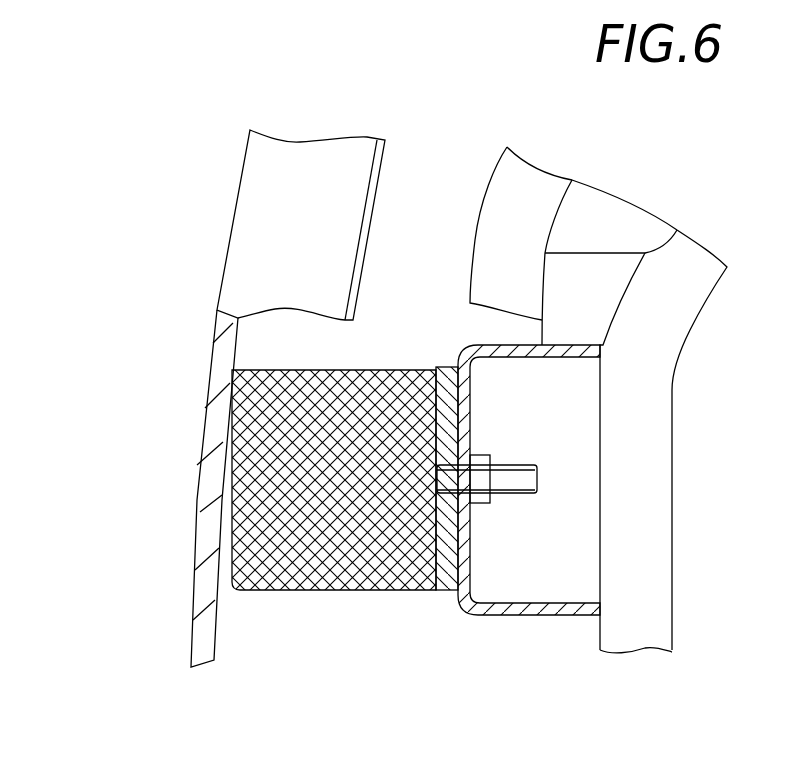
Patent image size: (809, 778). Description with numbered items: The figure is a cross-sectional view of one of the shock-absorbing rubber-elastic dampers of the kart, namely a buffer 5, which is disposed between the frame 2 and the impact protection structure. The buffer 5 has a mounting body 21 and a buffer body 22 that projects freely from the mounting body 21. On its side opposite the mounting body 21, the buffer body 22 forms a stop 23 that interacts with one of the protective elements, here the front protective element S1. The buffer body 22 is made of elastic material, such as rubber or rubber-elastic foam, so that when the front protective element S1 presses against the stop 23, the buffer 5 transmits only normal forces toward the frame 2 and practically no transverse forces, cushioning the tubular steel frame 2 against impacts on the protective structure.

The front protective element S1 is at (262, 210).
The frame 2 is at (637, 473).
The buffer 5 is at (358, 592).
The mounting body 21 is at (446, 565).
The buffer body 22 is at (325, 550).
The stop 23 is at (225, 497).